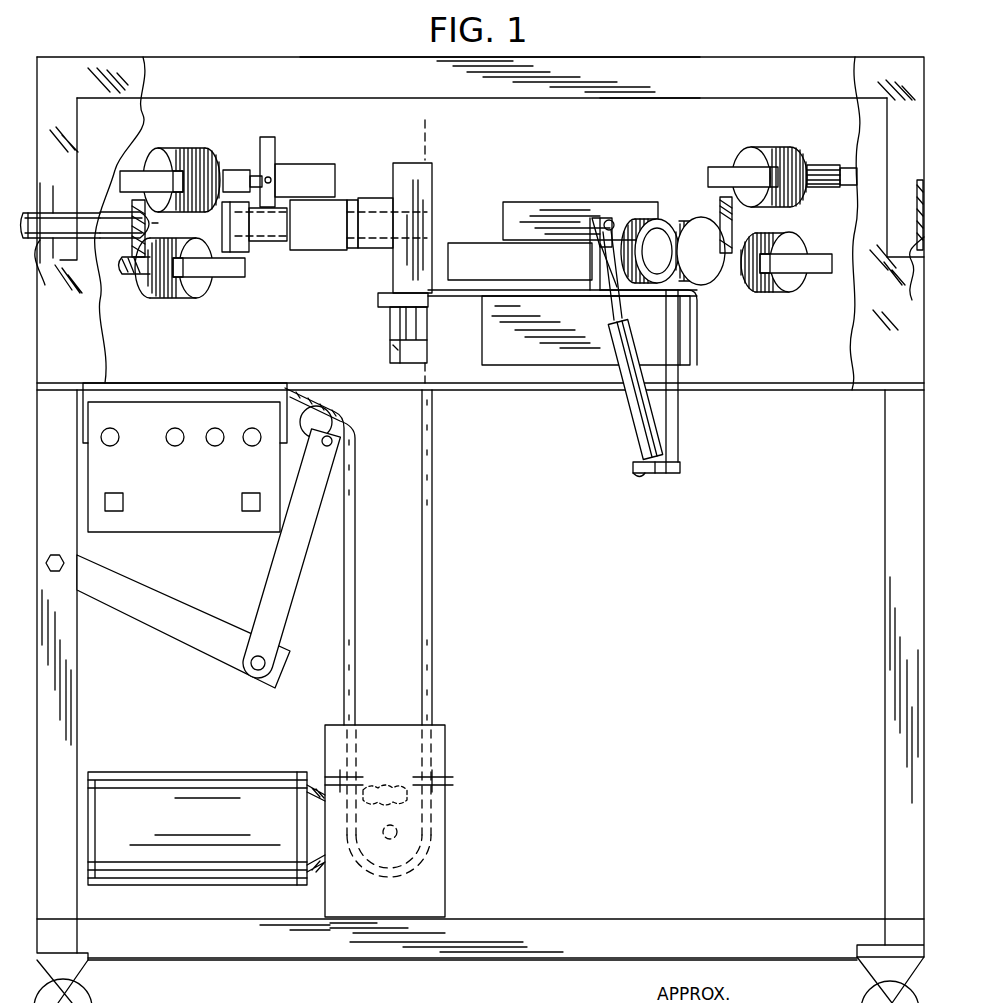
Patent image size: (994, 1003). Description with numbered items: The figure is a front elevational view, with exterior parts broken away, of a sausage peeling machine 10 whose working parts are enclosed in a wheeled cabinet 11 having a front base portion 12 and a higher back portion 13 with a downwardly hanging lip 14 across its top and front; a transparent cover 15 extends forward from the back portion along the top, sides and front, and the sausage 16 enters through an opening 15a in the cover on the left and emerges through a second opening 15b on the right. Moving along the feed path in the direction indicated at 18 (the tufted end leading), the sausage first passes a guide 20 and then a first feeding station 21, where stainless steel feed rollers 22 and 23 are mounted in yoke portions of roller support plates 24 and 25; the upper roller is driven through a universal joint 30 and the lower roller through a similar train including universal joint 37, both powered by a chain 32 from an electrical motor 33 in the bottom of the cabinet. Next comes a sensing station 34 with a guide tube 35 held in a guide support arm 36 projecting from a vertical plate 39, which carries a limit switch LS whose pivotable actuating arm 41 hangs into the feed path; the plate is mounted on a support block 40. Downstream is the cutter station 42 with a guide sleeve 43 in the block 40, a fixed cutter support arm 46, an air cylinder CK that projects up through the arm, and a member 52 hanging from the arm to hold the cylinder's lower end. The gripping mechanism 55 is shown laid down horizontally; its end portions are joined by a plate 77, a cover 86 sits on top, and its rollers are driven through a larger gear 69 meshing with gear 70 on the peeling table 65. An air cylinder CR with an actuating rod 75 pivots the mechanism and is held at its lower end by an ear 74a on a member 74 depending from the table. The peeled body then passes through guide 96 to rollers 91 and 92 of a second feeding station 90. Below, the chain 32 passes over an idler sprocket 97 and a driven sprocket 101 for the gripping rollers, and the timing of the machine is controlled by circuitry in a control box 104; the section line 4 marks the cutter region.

The sausage peeling machine 10 is at (806, 35).
The cabinet 11 is at (468, 969).
The front base portion 12 is at (62, 523).
The back portion 13 is at (575, 57).
The lip 14 is at (645, 79).
The transparent cover 15 is at (106, 350).
The opening 15a is at (54, 246).
The second opening 15b is at (921, 183).
The sausage 16 is at (27, 212).
The tuft 18 is at (158, 223).
The guide 20 is at (98, 216).
The first feeding station 21 is at (188, 147).
The upper feed roller 22 is at (150, 168).
The lower feed roller 23 is at (200, 297).
The upper roller support plate 24 is at (115, 198).
The lower roller support plate 25 is at (238, 278).
The universal joint 30 is at (238, 168).
The chain 32 is at (433, 627).
The electrical motor 33 is at (208, 771).
The sensing station 34 is at (265, 135).
The guide tube 35 is at (272, 243).
The guide support arm 36 is at (246, 255).
The universal joint 37 is at (128, 275).
The vertical plate 39 is at (327, 223).
The support block 40 is at (382, 246).
The actuating arm 41 is at (277, 155).
The cutter station 42 is at (403, 162).
The guide sleeve 43 is at (352, 250).
The fixed cutter support arm 46 is at (378, 303).
The member 52 is at (396, 340).
The gripping mechanism 55 is at (591, 178).
The peeling table 65 is at (690, 287).
The larger gear 69 is at (637, 221).
The gear 70 is at (710, 259).
The member 74 is at (683, 430).
The ear 74a is at (650, 474).
The actuating rod 75 is at (610, 308).
The plate 77 is at (542, 271).
The cover 86 is at (528, 200).
The second feeding station 90 is at (758, 140).
The upper roller 91 is at (735, 160).
The lower roller 92 is at (790, 290).
The guide 96 is at (720, 203).
The idler sprocket 97 is at (330, 412).
The driven sprocket 101 is at (440, 785).
The control box 104 is at (200, 481).
The section line 4 is at (428, 127).
The limit switch LS is at (313, 188).
The air cylinder CK is at (393, 346).
The air cylinder CR is at (636, 430).